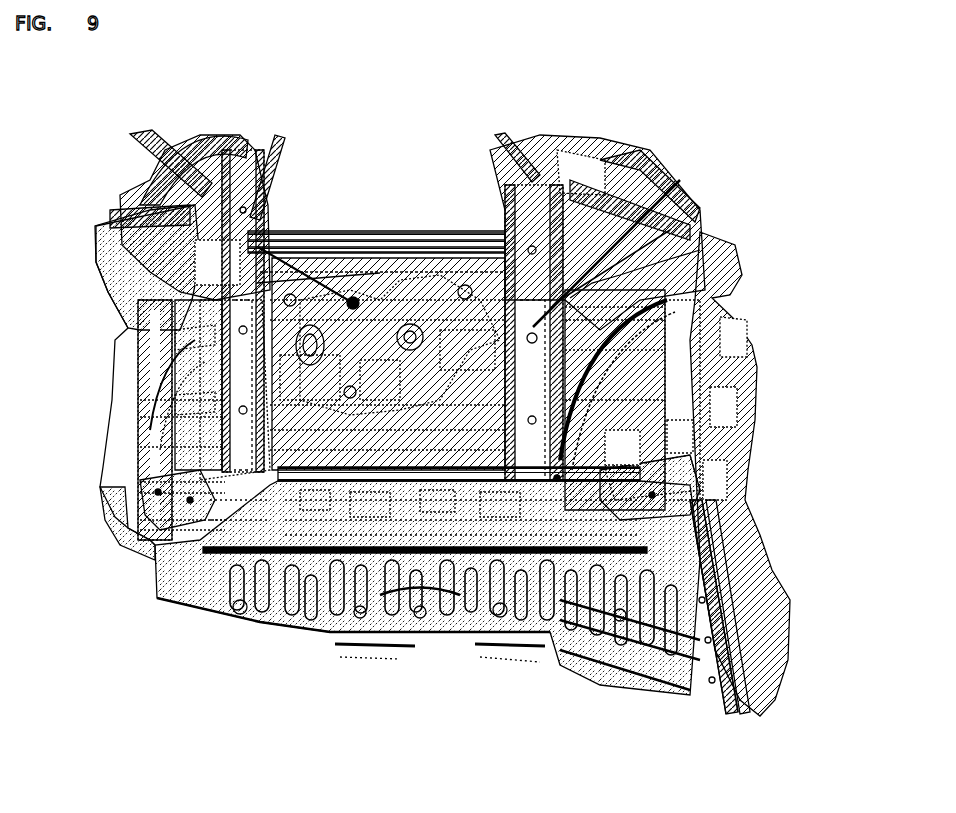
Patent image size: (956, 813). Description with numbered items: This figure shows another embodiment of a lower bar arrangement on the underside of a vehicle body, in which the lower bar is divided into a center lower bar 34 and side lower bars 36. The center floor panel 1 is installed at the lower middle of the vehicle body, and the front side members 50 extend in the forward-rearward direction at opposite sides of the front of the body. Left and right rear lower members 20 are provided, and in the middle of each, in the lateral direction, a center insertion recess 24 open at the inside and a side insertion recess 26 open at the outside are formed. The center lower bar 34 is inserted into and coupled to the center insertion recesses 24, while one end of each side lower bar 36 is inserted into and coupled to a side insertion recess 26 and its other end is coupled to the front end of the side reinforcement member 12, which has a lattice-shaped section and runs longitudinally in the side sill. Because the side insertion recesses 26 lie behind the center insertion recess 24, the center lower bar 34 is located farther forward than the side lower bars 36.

The center floor panel 1 is at (542, 603).
The side reinforcement member 12 is at (715, 648).
The rear lower member 20 is at (262, 423).
The center insertion recess 24 is at (261, 467).
The side insertion recess 26 is at (605, 470).
The center lower bar 34 is at (368, 470).
The side lower bar 36 is at (173, 493).
The front side member 50 is at (237, 316).